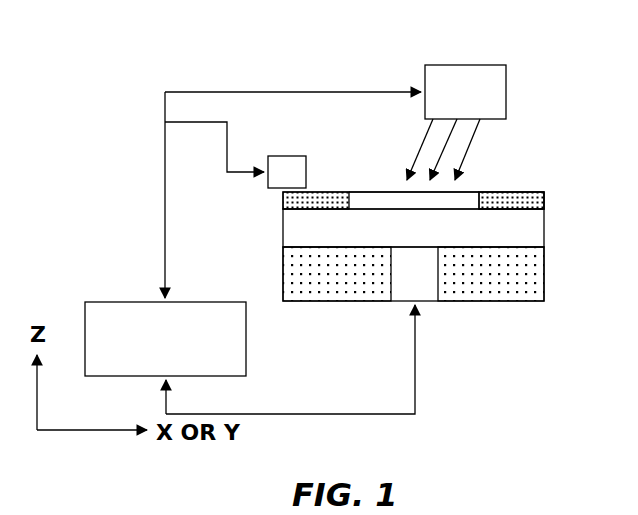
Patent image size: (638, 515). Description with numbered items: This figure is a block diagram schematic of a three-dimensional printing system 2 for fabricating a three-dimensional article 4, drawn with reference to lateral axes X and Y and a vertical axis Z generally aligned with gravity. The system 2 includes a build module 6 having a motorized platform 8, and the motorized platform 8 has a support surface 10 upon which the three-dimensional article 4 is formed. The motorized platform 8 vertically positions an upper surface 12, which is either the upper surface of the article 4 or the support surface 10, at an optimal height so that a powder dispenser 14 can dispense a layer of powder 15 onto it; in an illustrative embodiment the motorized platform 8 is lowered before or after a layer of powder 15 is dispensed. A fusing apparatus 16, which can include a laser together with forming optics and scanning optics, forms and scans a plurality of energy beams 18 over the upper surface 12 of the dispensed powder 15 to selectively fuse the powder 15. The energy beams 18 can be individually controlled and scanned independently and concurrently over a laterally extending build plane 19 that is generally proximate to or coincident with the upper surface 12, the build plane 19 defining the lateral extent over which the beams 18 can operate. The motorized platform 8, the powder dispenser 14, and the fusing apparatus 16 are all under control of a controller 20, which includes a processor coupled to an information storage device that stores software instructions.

The three-dimensional printing system 2 is at (357, 62).
The three-dimensional article 4 is at (383, 192).
The build module 6 is at (545, 268).
The motorized platform 8 is at (545, 226).
The support surface 10 is at (540, 208).
The upper surface 12 is at (503, 192).
The powder dispenser 14 is at (240, 174).
The powder 15 is at (323, 192).
The fusing apparatus 16 is at (467, 65).
The energy beams 18 is at (418, 146).
The build plane 19 is at (511, 200).
The controller 20 is at (128, 302).